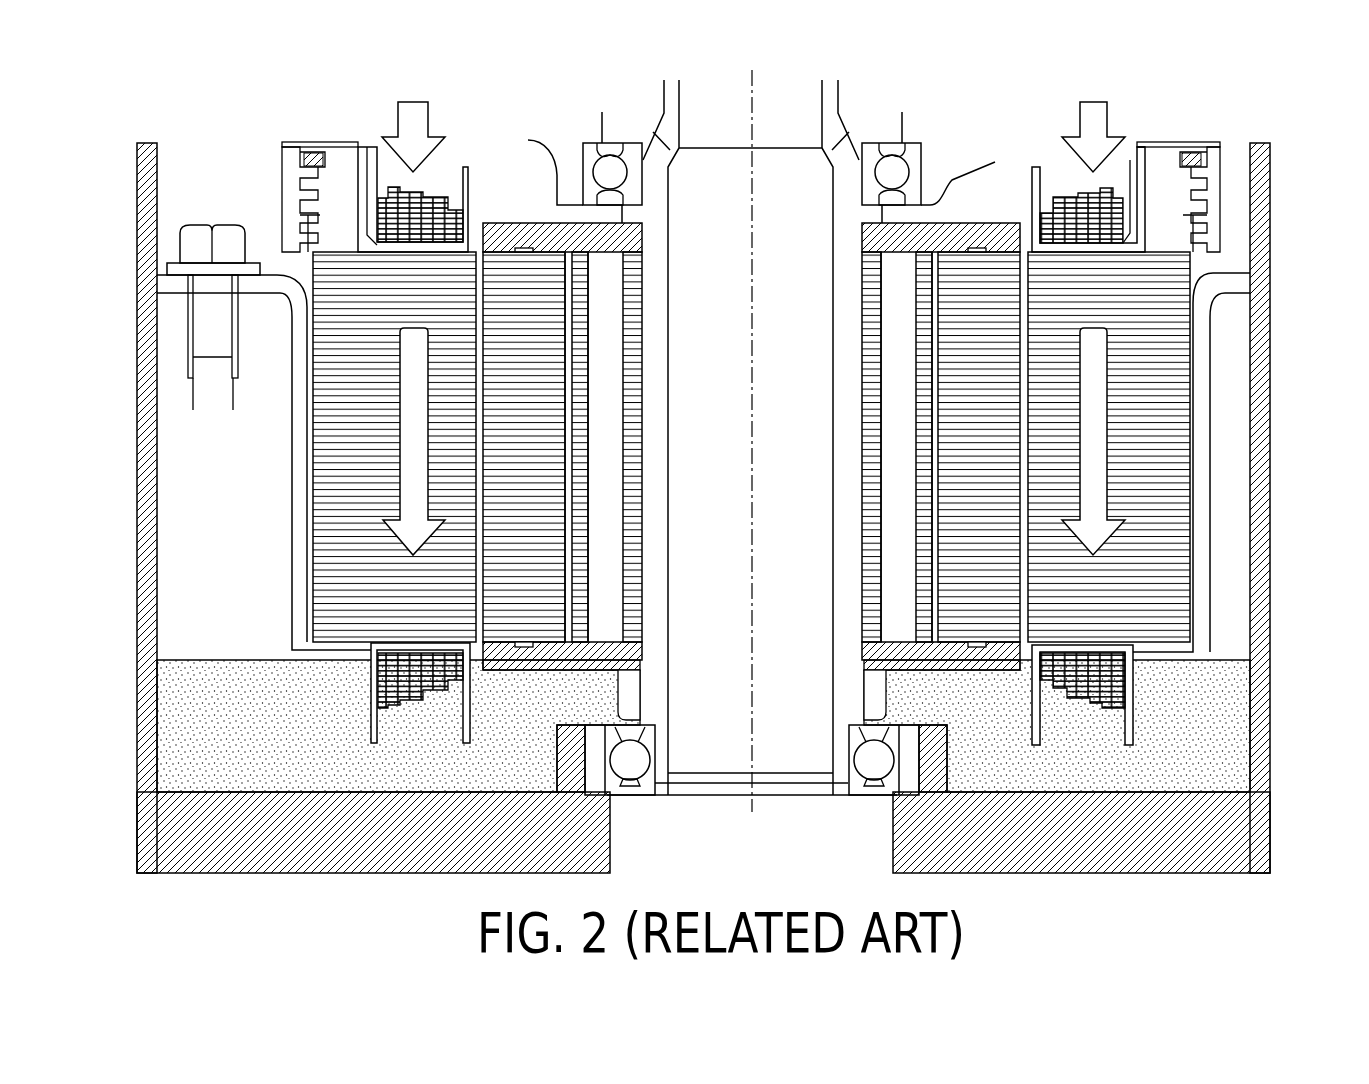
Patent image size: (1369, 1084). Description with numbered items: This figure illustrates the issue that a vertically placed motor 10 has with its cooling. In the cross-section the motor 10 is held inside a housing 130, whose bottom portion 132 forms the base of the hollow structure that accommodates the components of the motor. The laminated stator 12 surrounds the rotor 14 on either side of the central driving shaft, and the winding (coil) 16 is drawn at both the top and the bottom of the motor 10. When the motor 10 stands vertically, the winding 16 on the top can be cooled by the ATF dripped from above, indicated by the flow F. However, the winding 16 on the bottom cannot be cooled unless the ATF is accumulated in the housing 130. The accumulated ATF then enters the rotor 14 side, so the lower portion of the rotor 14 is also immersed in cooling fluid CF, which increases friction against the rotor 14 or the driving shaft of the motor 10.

The motor 10 is at (692, 483).
The stator 12 is at (1135, 313).
The rotor 14 is at (987, 603).
The winding (coil) 16 is at (437, 193).
The housing 130 is at (692, 508).
The bottom portion 132 is at (137, 829).
The cooling fluid CF is at (282, 753).
The flow F is at (415, 100).